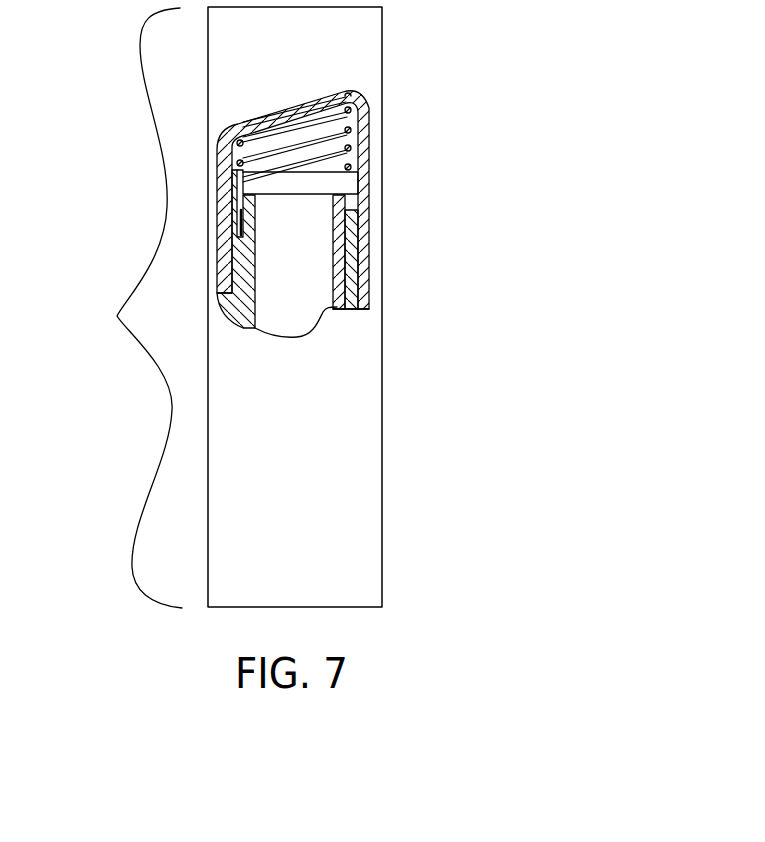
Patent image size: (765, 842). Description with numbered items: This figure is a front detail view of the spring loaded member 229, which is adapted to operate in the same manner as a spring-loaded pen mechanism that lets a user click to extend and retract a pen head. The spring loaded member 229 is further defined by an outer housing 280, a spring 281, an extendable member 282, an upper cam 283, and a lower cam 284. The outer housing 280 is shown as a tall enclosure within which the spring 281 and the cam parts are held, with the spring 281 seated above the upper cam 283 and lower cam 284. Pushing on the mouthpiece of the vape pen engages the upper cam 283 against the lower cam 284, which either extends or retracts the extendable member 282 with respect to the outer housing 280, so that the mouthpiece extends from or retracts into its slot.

The spring loaded member 229 is at (113, 308).
The outer housing 280 is at (382, 537).
The spring 281 is at (362, 181).
The extendable member 282 is at (340, 93).
The upper cam 283 is at (350, 292).
The lower cam 284 is at (335, 230).